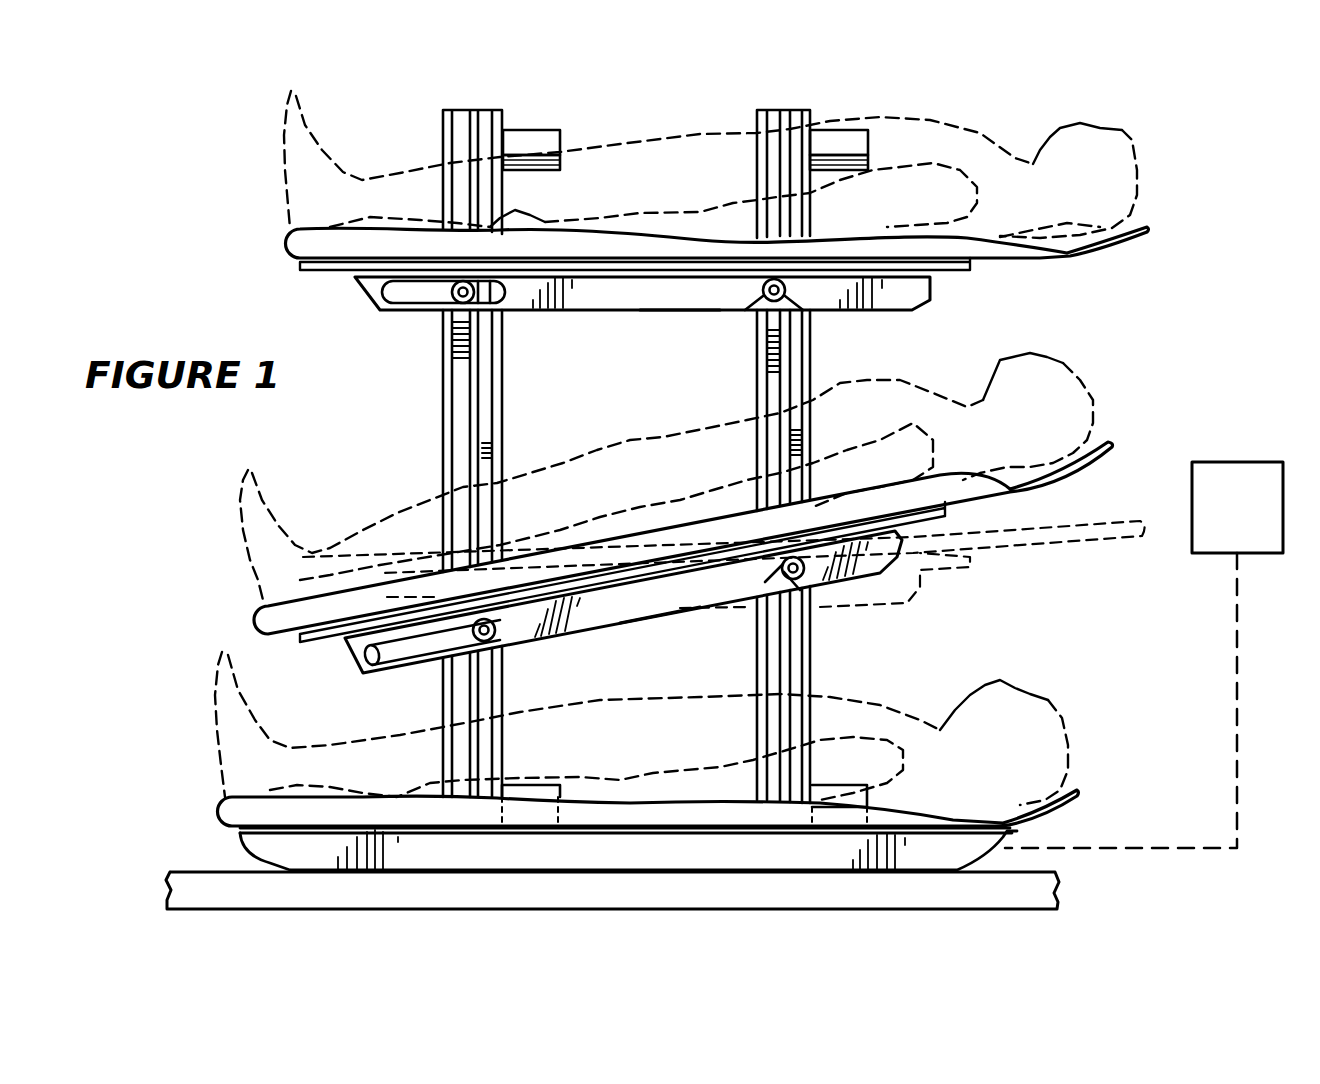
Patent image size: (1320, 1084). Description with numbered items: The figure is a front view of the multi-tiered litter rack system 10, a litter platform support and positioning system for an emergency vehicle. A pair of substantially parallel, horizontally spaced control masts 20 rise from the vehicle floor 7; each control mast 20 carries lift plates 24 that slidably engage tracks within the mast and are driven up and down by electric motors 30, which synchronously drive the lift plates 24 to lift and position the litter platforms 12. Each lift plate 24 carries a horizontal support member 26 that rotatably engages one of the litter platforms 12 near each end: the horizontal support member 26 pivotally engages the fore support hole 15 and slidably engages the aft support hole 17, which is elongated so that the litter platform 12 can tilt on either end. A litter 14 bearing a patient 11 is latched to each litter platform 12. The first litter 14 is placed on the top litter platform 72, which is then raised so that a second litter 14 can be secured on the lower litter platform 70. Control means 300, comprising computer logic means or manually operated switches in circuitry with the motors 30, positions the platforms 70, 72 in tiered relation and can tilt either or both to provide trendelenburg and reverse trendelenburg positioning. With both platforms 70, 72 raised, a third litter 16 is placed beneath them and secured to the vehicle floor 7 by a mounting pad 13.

The vehicle floor 7 is at (200, 870).
The multi-tiered litter rack system 10 is at (645, 443).
The patient 11 is at (1123, 133).
The litter platform 12 is at (927, 300).
The mounting pad 13 is at (1017, 832).
The litter 14 is at (1117, 247).
The fore support hole 15 is at (787, 291).
The third litter 16 is at (1070, 800).
The aft support hole 17 is at (408, 303).
The control mast 20 is at (470, 110).
The lift plate 24 is at (463, 400).
The horizontal support member 26 is at (472, 294).
The electric motor 30 is at (523, 132).
The lower litter platform 70 is at (657, 623).
The top litter platform 72 is at (675, 313).
The control means 300 is at (1220, 462).